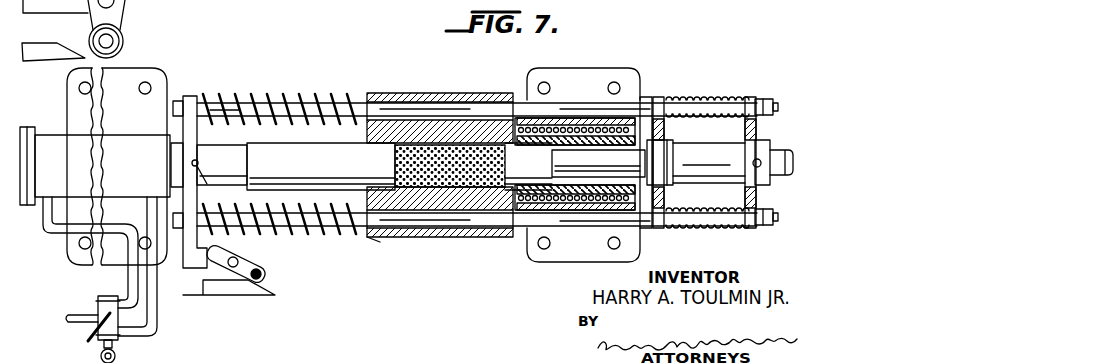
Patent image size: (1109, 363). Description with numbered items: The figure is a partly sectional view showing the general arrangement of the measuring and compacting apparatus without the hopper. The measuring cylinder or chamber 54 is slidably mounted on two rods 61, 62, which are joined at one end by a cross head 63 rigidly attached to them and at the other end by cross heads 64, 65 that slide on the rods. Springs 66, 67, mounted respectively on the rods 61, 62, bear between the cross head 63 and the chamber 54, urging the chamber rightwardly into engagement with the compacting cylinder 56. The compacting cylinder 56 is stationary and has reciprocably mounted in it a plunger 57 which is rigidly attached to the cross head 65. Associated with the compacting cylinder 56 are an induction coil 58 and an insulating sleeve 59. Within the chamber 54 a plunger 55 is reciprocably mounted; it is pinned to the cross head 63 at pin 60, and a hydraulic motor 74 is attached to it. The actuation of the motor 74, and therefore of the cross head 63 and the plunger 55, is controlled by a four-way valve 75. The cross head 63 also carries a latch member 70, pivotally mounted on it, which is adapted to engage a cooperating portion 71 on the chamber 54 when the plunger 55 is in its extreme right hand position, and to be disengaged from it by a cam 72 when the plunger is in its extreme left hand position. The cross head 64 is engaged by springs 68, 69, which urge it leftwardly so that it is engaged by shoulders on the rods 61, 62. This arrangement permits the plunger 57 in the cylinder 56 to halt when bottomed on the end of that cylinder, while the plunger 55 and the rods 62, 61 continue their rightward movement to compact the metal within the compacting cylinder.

The measuring cylinder 54 is at (390, 132).
The plunger 55 is at (319, 149).
The compacting cylinder 56 is at (642, 126).
The plunger 57 is at (612, 158).
The induction coil 58 is at (558, 116).
The insulating sleeve 59 is at (587, 117).
The pin 60 is at (207, 184).
The rod 61 is at (343, 103).
The rod 62 is at (335, 234).
The cross head 63 is at (192, 96).
The cross head 64 is at (662, 98).
The cross head 65 is at (749, 132).
The spring 66 is at (270, 101).
The spring 67 is at (313, 234).
The spring 68 is at (716, 94).
The spring 69 is at (731, 208).
The latch member 70 is at (117, 15).
The cooperating portion 71 is at (368, 240).
The cam 72 is at (78, 37).
The hydraulic motor 74 is at (131, 142).
The four-way valve 75 is at (99, 301).